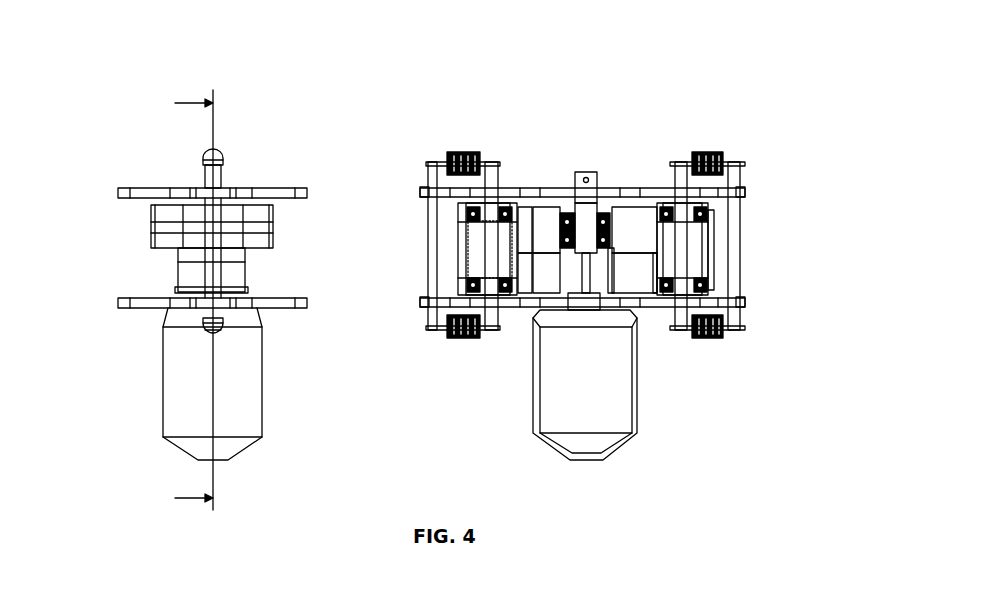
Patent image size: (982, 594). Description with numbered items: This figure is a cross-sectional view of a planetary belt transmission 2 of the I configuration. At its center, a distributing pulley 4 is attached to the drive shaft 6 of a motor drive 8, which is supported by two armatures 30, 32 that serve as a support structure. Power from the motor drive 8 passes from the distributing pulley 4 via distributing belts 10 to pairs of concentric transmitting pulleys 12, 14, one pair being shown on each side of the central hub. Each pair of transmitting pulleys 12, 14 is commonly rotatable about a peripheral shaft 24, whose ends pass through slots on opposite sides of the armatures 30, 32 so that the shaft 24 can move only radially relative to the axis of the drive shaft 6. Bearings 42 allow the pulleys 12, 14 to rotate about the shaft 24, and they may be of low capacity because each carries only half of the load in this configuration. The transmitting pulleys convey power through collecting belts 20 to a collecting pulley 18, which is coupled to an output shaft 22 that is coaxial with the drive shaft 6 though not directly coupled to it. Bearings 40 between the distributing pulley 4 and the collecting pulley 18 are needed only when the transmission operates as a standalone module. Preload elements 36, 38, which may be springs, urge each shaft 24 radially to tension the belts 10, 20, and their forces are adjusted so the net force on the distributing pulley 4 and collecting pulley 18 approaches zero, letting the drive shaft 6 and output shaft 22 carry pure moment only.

The planetary belt transmission 2 is at (240, 122).
The distributing pulley 4 is at (618, 256).
The drive shaft 6 is at (545, 263).
The motor drive 8 is at (248, 420).
The distributing belts 10 is at (525, 284).
The transmitting pulley 12 is at (463, 260).
The transmitting pulley 14 is at (462, 228).
The collecting pulley 18 is at (543, 207).
The collecting belts 20 is at (492, 187).
The output shaft 22 is at (584, 186).
The peripheral shaft 24 is at (487, 184).
The armature 30 is at (306, 192).
The armature 32 is at (420, 302).
The preload element 36 is at (218, 153).
The preload element 38 is at (218, 333).
The bearings 40 is at (630, 207).
The bearings 42 is at (712, 204).